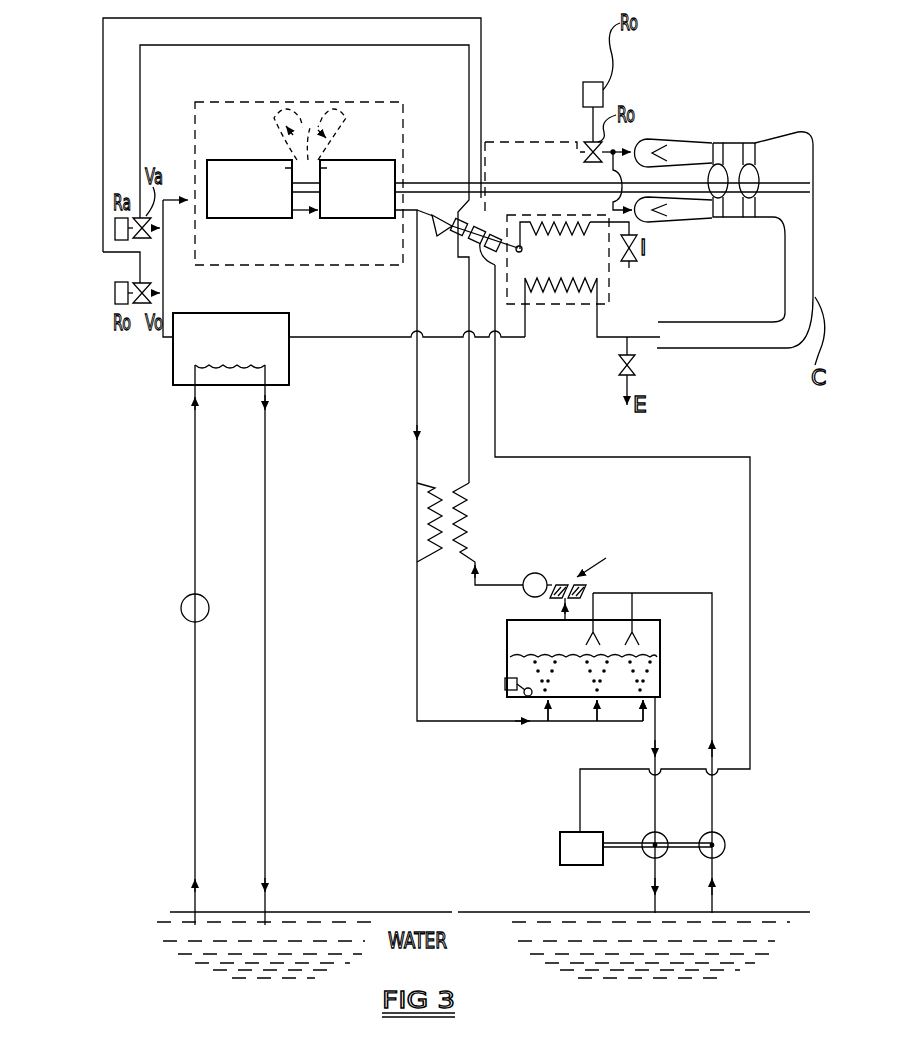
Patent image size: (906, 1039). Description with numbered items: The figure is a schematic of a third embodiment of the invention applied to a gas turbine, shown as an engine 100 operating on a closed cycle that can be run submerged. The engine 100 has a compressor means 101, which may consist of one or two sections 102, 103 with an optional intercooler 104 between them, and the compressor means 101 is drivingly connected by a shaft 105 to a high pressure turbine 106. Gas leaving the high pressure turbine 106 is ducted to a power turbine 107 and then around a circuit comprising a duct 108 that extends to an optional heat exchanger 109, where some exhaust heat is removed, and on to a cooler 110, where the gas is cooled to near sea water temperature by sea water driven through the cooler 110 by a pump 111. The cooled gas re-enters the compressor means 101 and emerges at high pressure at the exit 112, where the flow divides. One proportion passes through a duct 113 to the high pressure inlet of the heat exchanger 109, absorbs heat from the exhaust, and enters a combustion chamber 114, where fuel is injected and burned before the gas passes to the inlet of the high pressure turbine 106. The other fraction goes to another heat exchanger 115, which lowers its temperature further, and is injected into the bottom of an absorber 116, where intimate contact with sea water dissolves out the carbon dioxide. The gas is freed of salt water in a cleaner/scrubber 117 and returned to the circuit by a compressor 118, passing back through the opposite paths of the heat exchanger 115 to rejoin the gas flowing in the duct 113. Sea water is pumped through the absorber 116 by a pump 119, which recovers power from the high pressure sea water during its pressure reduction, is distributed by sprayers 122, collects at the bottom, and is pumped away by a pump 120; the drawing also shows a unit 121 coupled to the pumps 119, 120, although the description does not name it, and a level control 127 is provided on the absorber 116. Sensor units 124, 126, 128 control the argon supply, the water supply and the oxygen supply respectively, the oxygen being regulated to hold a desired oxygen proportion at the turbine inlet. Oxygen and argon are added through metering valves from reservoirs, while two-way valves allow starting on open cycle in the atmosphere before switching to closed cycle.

The engine 100 is at (737, 103).
The compressor means 101 is at (255, 101).
The compressor section 102 is at (249, 189).
The compressor section 103 is at (357, 189).
The intercooler 104 is at (326, 127).
The shaft 105 is at (556, 181).
The high pressure turbine 106 is at (712, 133).
The power turbine 107 is at (259, 266).
The duct 108 is at (731, 258).
The heat exchanger 109 is at (609, 272).
The cooler 110 is at (231, 311).
The pump 111 is at (180, 621).
The exit 112 is at (418, 206).
The duct 113 is at (437, 235).
The combustion chamber 114 is at (658, 135).
The heat exchanger 115 is at (470, 512).
The absorber 116 is at (502, 683).
The cleaner/scrubber 117 is at (587, 588).
The compressor 118 is at (540, 574).
The pump 119 is at (720, 834).
The pump 120 is at (647, 834).
The electric motor 121 is at (553, 832).
The sprayers 122 is at (638, 640).
The sensor unit 124 is at (452, 243).
The sensor unit 126 is at (492, 231).
The level control 127 is at (511, 694).
The sensor unit 128 is at (495, 265).